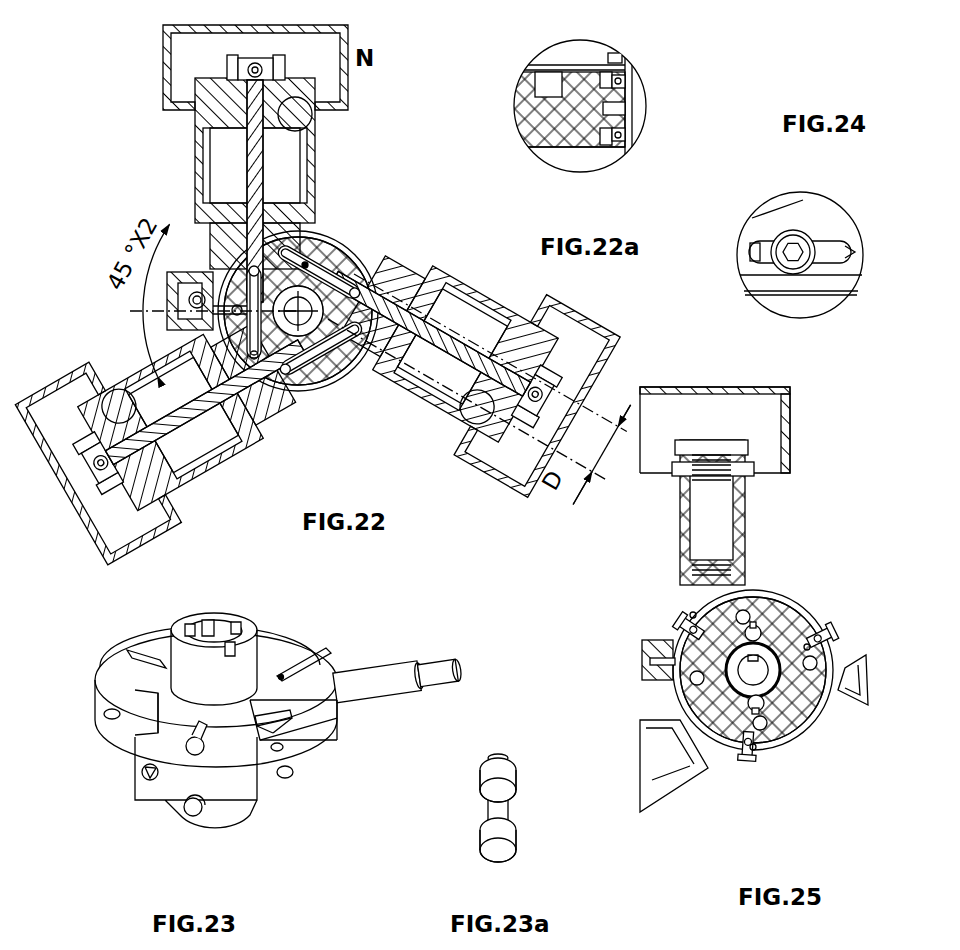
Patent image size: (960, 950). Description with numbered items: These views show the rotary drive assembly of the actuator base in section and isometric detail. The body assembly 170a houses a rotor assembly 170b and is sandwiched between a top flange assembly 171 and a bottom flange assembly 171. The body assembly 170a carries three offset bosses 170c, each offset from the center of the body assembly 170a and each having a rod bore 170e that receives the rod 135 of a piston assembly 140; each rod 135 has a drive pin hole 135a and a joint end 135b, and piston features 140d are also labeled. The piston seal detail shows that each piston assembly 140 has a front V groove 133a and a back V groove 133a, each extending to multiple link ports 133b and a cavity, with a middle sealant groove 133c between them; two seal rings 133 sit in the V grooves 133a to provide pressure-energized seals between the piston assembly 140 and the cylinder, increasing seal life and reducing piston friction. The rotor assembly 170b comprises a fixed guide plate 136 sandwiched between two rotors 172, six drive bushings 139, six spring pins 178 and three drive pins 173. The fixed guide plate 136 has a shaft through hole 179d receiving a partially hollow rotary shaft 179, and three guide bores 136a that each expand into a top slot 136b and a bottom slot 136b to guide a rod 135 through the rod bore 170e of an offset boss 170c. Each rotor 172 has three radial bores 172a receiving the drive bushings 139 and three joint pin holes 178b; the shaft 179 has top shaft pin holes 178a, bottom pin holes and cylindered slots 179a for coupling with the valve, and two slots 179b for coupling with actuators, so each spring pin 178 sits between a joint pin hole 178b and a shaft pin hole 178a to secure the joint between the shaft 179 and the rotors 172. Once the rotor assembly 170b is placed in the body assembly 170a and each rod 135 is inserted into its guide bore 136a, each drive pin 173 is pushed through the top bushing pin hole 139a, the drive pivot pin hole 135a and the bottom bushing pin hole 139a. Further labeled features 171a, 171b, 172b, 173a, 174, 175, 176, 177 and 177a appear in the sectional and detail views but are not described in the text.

In FIG. 22a, the seal ring 133 is at (628, 80).
In FIG. 22a, the V groove 133a is at (617, 80).
In FIG. 22a, the link port 133b is at (605, 78).
In FIG. 22a, the middle sealant groove 133c is at (612, 108).
In FIG. 22, the rod 135 is at (250, 183).
In FIG. 23, the rod 135 is at (403, 693).
In FIG. 22, the drive pin hole 135a is at (253, 266).
In FIG. 23, the shaft end 135b is at (435, 697).
In FIG. 22, the fixed guide plate 136 is at (342, 372).
In FIG. 23, the fixed guide plate 136 is at (97, 760).
In FIG. 22, the guide bore 136a is at (337, 280).
In FIG. 23, the guide bore 136a is at (157, 807).
In FIG. 22, the slot 136b is at (303, 265).
In FIG. 23, the slot 136b is at (138, 713).
In FIG. 23, the drive bushing 139 is at (195, 822).
In FIG. 23a, the drive bushing 139 is at (525, 787).
In FIG. 23a, the bushing pin hole 139a is at (493, 777).
In FIG. 22a, the piston assembly 140 is at (522, 100).
In FIG. 22, the housing bracket 140d is at (197, 97).
In FIG. 22, the body assembly 170a is at (340, 238).
In FIG. 24, the body assembly 170a is at (820, 274).
In FIG. 23, the rotor assembly 170b is at (353, 857).
In FIG. 22, the offset boss 170c is at (290, 365).
In FIG. 22, the rod bore 170e is at (225, 372).
In FIG. 24, the flange assembly 171 is at (830, 238).
In FIG. 25, the slot end block 171a is at (707, 638).
In FIG. 25, the slot hole 171b is at (770, 600).
In FIG. 23, the rotor 172 is at (105, 668).
In FIG. 23, the radial bore 172a is at (158, 783).
In FIG. 23, the block plate 172b is at (133, 660).
In FIG. 22, the drive pin 173 is at (305, 265).
In FIG. 23, the drive pin 173 is at (210, 752).
In FIG. 23a, the drive pin 173 is at (505, 822).
In FIG. 25, the pin hole 173a is at (763, 630).
In FIG. 24, the slot end 174 is at (847, 254).
In FIG. 25, the slot end 174 is at (693, 615).
In FIG. 24, the bolt 175 is at (797, 233).
In FIG. 25, the bolt 175 is at (672, 618).
In FIG. 25, the central bore 176 is at (685, 693).
In FIG. 24, the rim 177 is at (848, 300).
In FIG. 25, the rim 177 is at (785, 753).
In FIG. 25, the rim edge 177a is at (670, 703).
In FIG. 23, the spring pin 178 is at (267, 715).
In FIG. 23, the shaft pin hole 178a is at (270, 719).
In FIG. 23, the joint pin hole 178b is at (275, 730).
In FIG. 22, the rotary shaft 179 is at (300, 334).
In FIG. 23, the rotary shaft 179 is at (200, 667).
In FIG. 23, the cylindered slot 179a is at (187, 631).
In FIG. 23, the slot 179b is at (210, 626).
In FIG. 23, the shaft through hole 179d is at (281, 677).